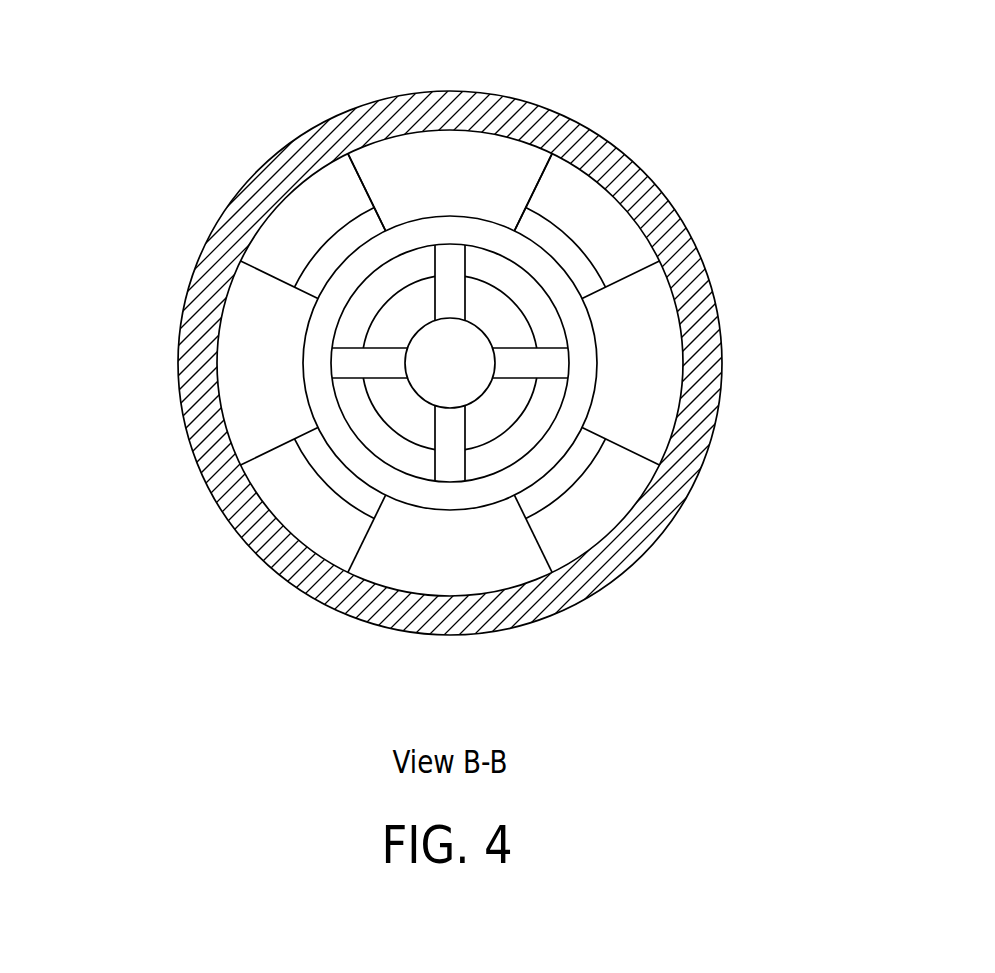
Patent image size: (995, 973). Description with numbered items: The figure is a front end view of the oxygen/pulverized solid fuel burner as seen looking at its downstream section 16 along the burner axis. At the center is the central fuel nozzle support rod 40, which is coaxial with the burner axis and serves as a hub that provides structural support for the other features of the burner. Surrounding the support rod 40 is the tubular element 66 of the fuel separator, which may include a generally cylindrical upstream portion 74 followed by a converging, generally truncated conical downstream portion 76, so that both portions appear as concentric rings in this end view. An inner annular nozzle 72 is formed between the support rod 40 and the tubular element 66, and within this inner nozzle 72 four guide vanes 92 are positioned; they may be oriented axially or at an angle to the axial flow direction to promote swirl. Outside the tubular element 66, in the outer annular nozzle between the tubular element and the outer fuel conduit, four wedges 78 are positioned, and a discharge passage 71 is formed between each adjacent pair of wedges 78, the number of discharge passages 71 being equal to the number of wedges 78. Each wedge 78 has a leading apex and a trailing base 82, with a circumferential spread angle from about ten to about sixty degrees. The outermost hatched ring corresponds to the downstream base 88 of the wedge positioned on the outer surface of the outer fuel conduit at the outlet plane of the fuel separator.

The downstream section 16 is at (645, 127).
The central fuel nozzle support rod 40 is at (413, 405).
The tubular element 66 is at (446, 500).
The discharge passage 71 is at (298, 212).
The inner annular nozzle 72 is at (503, 405).
The generally cylindrical upstream portion 74 is at (523, 475).
The converging generally truncated conical downstream portion 76 is at (523, 433).
The wedges 78 is at (365, 175).
The trailing base 82 is at (485, 168).
The downstream base 88 is at (183, 365).
The guide vanes 92 is at (545, 363).